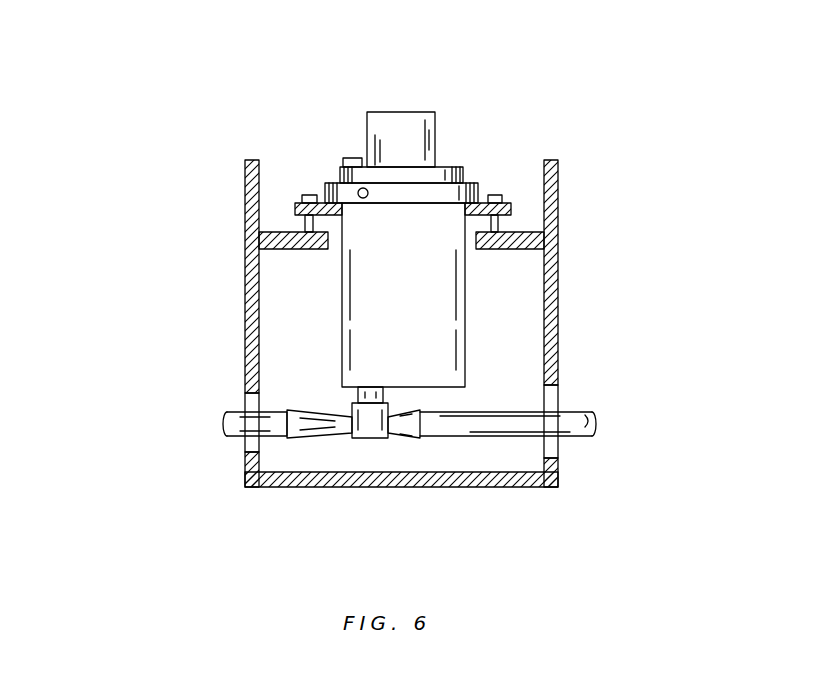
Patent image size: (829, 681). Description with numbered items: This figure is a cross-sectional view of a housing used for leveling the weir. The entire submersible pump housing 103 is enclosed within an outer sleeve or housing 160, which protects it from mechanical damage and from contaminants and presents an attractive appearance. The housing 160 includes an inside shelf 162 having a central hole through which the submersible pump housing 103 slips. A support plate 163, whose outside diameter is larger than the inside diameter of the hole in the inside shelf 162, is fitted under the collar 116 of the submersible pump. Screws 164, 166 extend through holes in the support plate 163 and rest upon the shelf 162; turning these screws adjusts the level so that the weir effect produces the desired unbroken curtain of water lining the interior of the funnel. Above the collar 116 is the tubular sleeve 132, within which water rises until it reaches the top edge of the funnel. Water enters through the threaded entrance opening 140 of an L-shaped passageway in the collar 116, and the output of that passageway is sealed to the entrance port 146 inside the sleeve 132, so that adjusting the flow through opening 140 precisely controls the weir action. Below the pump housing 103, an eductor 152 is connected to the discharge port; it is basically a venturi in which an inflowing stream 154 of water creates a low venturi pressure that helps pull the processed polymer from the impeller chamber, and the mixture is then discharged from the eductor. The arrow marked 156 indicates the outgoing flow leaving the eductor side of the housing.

The submersible pump housing 103 is at (420, 318).
The collar 116 is at (474, 183).
The tubular sleeve 132 is at (435, 127).
The threaded entrance opening 140 is at (347, 187).
The entrance port 146 is at (350, 158).
The eductor 152 is at (368, 443).
The inflowing stream of water 154 is at (612, 423).
The outlet flow 156 is at (197, 425).
The outer sleeve or housing 160 is at (558, 345).
The inside shelf 162 is at (300, 249).
The support plate 163 is at (512, 212).
The screw 164 is at (302, 198).
The screw 166 is at (502, 196).